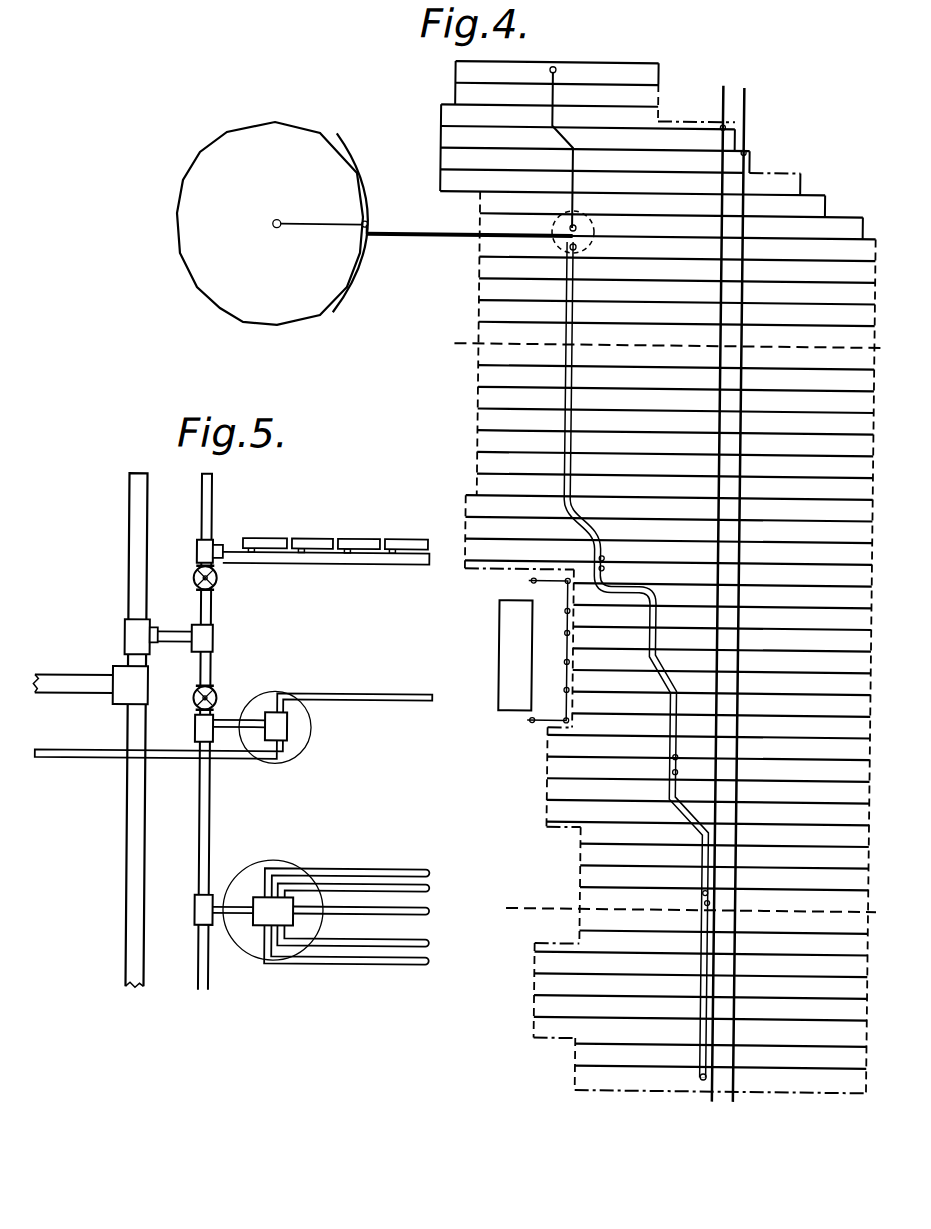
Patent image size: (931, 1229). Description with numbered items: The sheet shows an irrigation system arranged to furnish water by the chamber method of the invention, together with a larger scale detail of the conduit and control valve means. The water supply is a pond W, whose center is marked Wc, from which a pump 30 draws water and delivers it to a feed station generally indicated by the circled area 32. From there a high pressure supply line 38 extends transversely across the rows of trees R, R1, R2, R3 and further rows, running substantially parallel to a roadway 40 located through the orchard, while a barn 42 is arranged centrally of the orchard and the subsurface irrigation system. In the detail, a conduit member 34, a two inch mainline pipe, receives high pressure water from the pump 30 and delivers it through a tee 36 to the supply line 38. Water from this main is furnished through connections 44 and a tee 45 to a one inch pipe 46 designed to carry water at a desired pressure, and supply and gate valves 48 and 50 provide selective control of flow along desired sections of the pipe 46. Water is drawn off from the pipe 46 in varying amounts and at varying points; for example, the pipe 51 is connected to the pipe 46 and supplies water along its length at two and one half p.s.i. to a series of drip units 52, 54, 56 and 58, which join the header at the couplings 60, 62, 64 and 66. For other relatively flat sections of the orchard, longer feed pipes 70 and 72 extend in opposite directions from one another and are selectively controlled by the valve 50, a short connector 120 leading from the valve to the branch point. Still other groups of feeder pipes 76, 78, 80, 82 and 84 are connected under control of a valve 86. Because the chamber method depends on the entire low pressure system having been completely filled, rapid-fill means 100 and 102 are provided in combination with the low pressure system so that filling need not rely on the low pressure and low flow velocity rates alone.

In FIG. 4, the row of trees R is at (450, 65).
In FIG. 4, the row of trees R1 is at (452, 86).
In FIG. 4, the row of trees R2 is at (443, 108).
In FIG. 4, the row of trees R3 is at (440, 131).
In FIG. 4, the pond W is at (204, 163).
In FIG. 4, the water source center Wc is at (278, 225).
In FIG. 4, the pump 30 is at (365, 226).
In FIG. 4, the feed station 32 is at (465, 229).
In FIG. 4, the conduit member 34 is at (414, 243).
In FIG. 5, the conduit member 34 is at (60, 676).
In FIG. 5, the tee 36 is at (113, 700).
In FIG. 4, the high pressure supply line 38 is at (577, 296).
In FIG. 5, the high pressure supply line 38 is at (128, 535).
In FIG. 4, the roadway 40 is at (730, 89).
In FIG. 4, the barn 42 is at (513, 703).
In FIG. 5, the connections 44 is at (176, 630).
In FIG. 5, the tee 45 is at (213, 640).
In FIG. 5, the pipe 46 is at (211, 508).
In FIG. 5, the supply valve 48 is at (216, 574).
In FIG. 5, the gate valve 50 is at (216, 697).
In FIG. 5, the pipe 51 is at (318, 565).
In FIG. 5, the drip unit 52 is at (272, 538).
In FIG. 5, the drip unit 54 is at (313, 538).
In FIG. 5, the drip unit 56 is at (358, 538).
In FIG. 5, the drip unit 58 is at (405, 538).
In FIG. 5, the coupling 60 is at (246, 548).
In FIG. 5, the coupling 62 is at (298, 564).
In FIG. 5, the coupling 64 is at (348, 564).
In FIG. 5, the coupling 66 is at (394, 564).
In FIG. 5, the feed pipe 70 is at (361, 693).
In FIG. 5, the feed pipe 72 is at (238, 760).
In FIG. 5, the feeder pipe 76 is at (366, 868).
In FIG. 5, the feeder pipe 78 is at (398, 883).
In FIG. 5, the feeder pipe 80 is at (431, 910).
In FIG. 5, the feeder pipe 82 is at (431, 942).
In FIG. 5, the feeder pipe 84 is at (431, 960).
In FIG. 5, the valve 86 is at (242, 878).
In FIG. 5, the rapid-fill means 100 is at (288, 729).
In FIG. 5, the rapid-fill means 102 is at (271, 900).
In FIG. 5, the connector pipe 120 is at (232, 728).